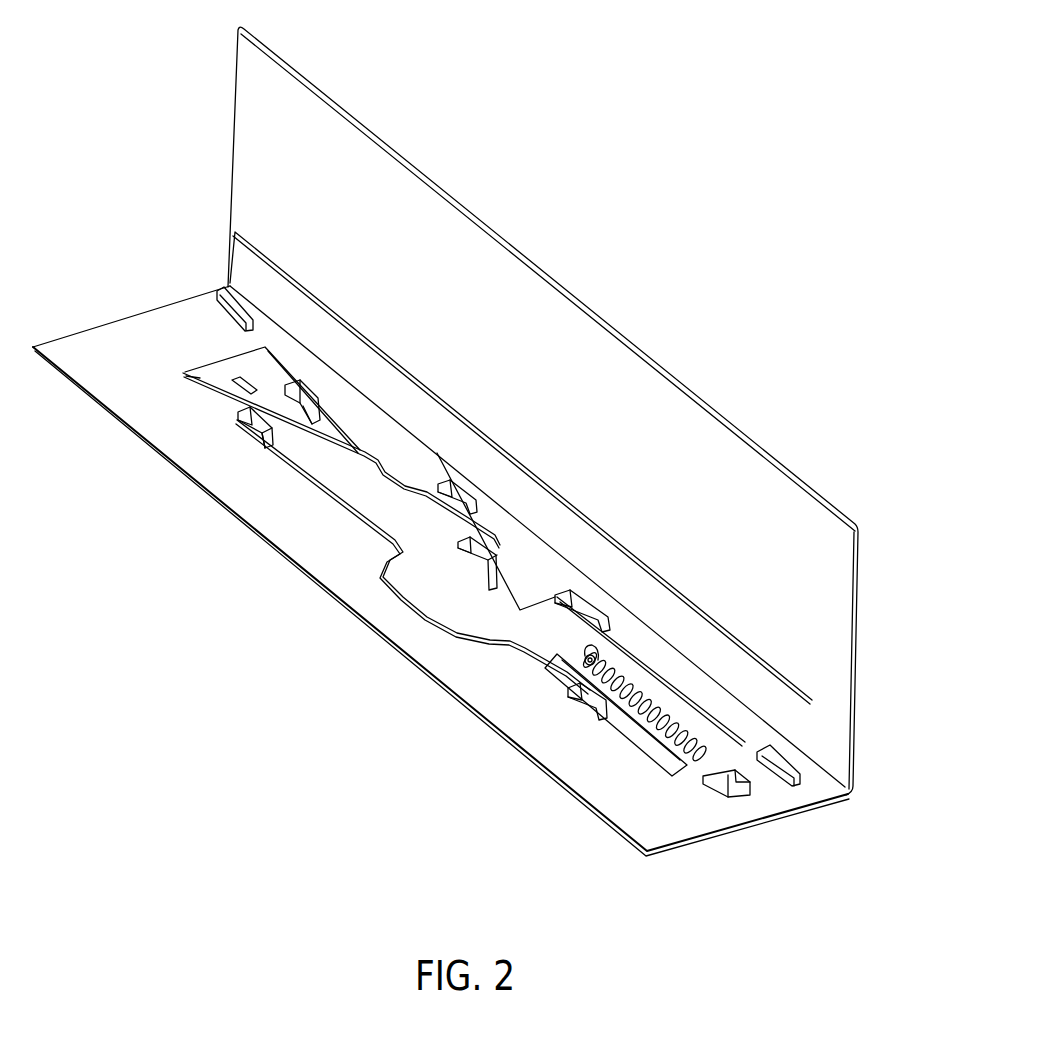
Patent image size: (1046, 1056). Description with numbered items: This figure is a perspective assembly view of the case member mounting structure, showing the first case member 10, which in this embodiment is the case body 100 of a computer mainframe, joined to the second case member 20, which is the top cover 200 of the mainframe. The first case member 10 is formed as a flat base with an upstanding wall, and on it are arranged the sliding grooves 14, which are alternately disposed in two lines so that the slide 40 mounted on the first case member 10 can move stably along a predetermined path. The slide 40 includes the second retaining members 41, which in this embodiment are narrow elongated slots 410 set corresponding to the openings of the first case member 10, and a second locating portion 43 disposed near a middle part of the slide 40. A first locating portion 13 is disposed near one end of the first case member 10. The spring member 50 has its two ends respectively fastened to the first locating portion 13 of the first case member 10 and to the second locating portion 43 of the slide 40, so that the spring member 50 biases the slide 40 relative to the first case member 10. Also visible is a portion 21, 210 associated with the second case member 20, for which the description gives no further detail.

The first case member 10 is at (441, 559).
The case body 100 is at (100, 335).
The second case member 20 is at (543, 411).
The top cover 200 is at (478, 233).
The positioning member 21 is at (187, 400).
The positioning portion 210 is at (297, 393).
The sliding grooves 14 is at (253, 430).
The second retaining members 41 is at (315, 481).
The narrow elongated slots 410 is at (333, 435).
The slide 40 is at (345, 477).
The second locating portion 43 is at (587, 660).
The spring member 50 is at (660, 700).
The first locating portion 13 is at (738, 790).